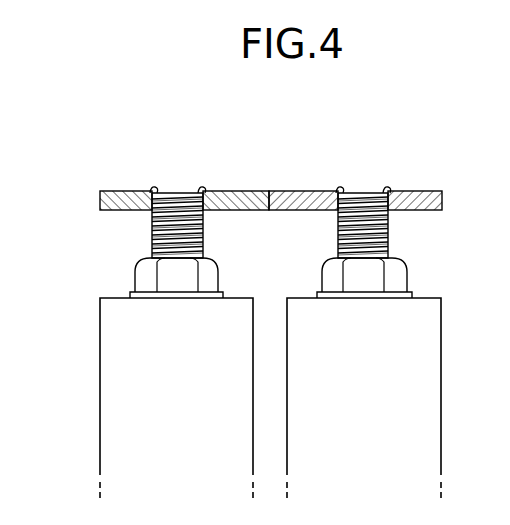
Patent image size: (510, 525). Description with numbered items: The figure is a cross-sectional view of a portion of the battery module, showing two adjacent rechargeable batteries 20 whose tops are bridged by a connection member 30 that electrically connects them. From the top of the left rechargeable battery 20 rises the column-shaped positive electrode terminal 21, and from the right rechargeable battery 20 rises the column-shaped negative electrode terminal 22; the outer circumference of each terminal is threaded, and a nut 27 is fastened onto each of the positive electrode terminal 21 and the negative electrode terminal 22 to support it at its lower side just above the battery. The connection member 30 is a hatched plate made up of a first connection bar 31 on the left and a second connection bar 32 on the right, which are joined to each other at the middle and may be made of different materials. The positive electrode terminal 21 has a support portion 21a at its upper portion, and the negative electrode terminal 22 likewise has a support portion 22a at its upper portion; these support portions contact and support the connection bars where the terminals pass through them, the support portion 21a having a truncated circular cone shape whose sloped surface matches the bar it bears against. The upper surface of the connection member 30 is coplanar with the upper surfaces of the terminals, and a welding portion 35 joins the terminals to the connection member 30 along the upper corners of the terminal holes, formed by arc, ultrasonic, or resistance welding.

The rechargeable battery 20 is at (88, 397).
The positive electrode terminal 21 is at (150, 222).
The support portion 21a is at (153, 190).
The negative electrode terminal 22 is at (362, 196).
The support portion 22a is at (387, 190).
The nut 27 is at (146, 270).
The connection member 30 is at (271, 157).
The first connection bar 31 is at (115, 191).
The second connection bar 32 is at (426, 191).
The welding portion 35 is at (203, 188).